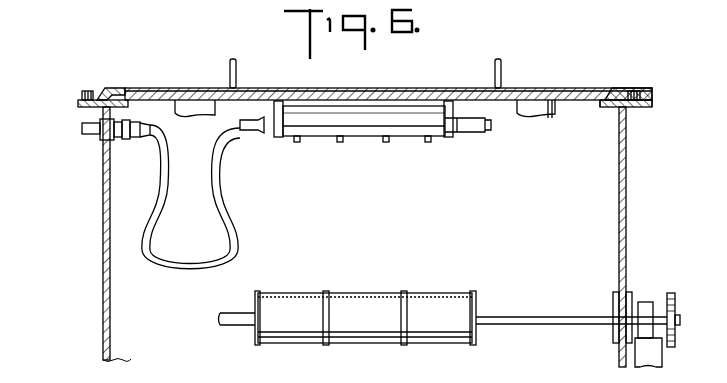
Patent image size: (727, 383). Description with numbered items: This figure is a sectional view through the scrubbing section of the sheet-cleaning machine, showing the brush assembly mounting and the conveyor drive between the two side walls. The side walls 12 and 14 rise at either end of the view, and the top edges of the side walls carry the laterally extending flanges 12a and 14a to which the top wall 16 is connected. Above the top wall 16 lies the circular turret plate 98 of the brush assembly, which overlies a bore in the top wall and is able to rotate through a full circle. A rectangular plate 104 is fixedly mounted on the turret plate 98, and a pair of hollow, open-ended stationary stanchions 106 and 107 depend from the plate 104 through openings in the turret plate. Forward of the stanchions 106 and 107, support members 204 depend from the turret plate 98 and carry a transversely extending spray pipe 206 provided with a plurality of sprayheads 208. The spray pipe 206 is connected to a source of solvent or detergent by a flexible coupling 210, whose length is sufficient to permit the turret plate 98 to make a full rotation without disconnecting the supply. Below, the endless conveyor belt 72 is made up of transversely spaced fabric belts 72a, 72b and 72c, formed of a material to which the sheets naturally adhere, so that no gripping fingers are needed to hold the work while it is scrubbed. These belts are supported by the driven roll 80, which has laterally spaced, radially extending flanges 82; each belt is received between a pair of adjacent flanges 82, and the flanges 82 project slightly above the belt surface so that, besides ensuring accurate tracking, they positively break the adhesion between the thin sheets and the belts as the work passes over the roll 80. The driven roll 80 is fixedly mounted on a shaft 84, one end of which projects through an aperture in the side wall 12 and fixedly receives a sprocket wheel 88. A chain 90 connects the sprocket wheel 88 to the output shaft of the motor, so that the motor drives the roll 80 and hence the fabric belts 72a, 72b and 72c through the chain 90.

The side wall 12 is at (626, 190).
The laterally extending flange 12a is at (642, 108).
The side wall 14 is at (102, 292).
The laterally extending flange 14a is at (80, 105).
The top wall 16 is at (608, 108).
The endless conveyor belt 72 is at (365, 286).
The fabric belt 72a is at (295, 292).
The fabric belt 72b is at (362, 292).
The fabric belt 72c is at (456, 292).
The driven roll 80 is at (290, 325).
The radially extending flange 82 is at (258, 345).
The shaft 84 is at (525, 316).
The sprocket wheel 88 is at (650, 302).
The chain 90 is at (676, 296).
The turret plate 98 is at (584, 101).
The rectangular plate 104 is at (282, 87).
The stanchion 106 is at (205, 116).
The stanchion 107 is at (542, 118).
The support member 204 is at (274, 110).
The spray pipe 206 is at (368, 119).
The sprayhead 208 is at (340, 143).
The flexible coupling 210 is at (228, 222).